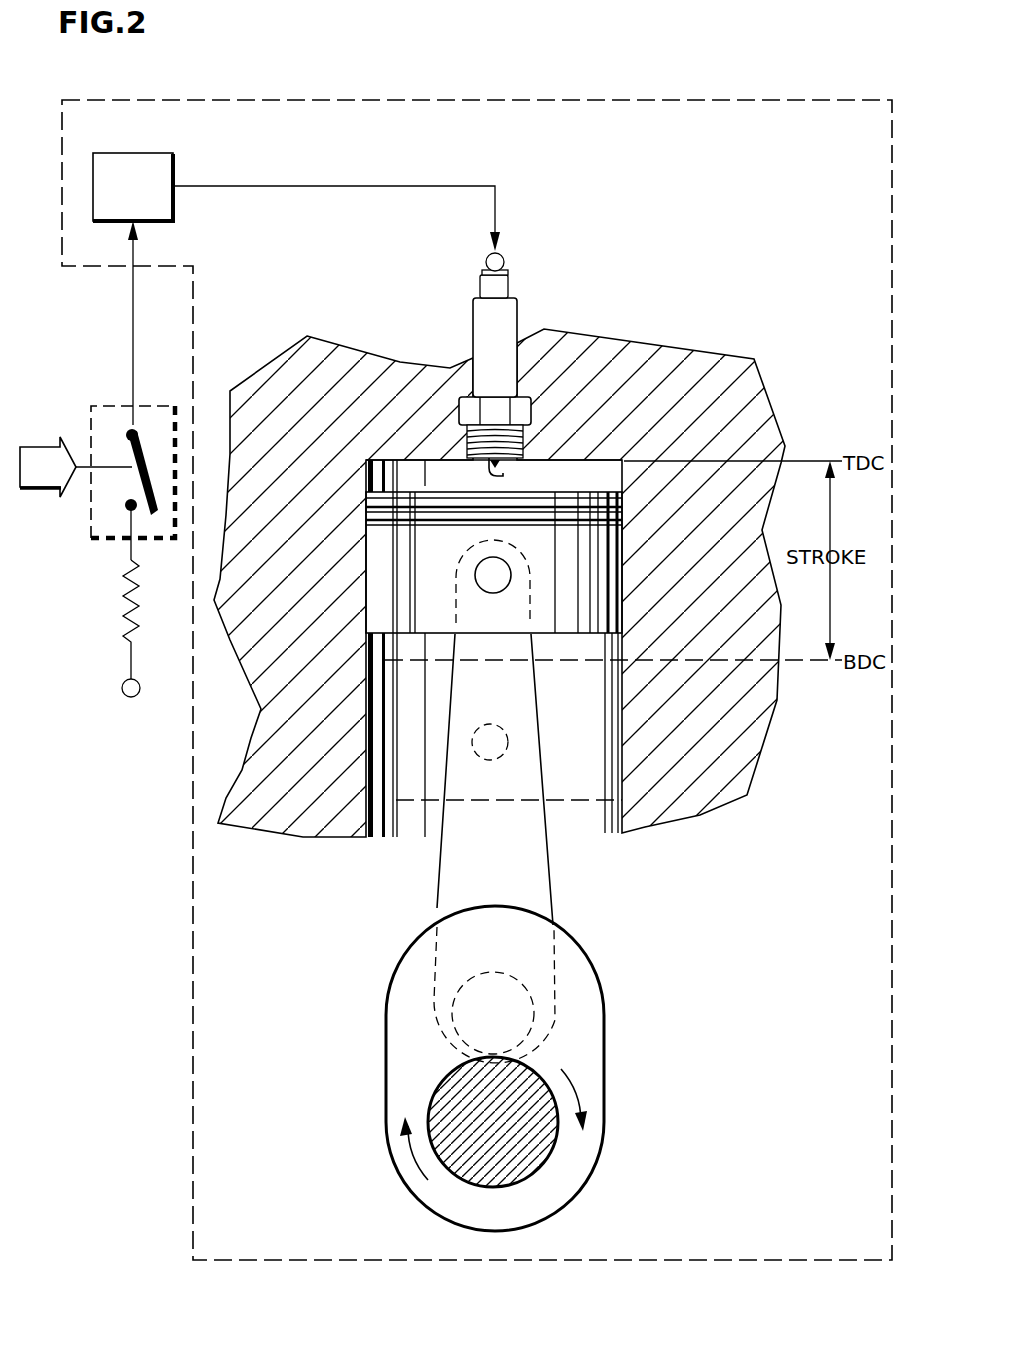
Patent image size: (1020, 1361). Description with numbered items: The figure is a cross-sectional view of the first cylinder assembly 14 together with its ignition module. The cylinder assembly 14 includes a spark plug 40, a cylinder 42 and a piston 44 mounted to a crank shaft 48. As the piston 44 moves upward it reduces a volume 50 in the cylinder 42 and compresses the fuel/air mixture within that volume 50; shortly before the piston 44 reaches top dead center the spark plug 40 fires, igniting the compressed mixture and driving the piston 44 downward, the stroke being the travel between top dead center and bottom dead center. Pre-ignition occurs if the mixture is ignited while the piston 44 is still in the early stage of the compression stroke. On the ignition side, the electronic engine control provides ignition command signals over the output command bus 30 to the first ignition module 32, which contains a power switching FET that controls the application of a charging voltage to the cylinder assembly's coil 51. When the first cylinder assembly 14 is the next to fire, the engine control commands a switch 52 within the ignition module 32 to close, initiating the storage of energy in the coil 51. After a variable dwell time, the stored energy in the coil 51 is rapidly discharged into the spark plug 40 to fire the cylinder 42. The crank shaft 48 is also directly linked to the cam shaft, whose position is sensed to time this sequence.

The cylinder assembly #1 14 is at (606, 94).
The coil 51 is at (178, 203).
The switch 52 is at (127, 448).
The ignition module #1 32 is at (84, 529).
The output command bus 30 is at (76, 467).
The spark plug 40 is at (509, 349).
The volume 50 is at (571, 485).
The piston 44 is at (451, 555).
The cylinder 42 is at (611, 790).
The crank shaft 48 is at (580, 1020).